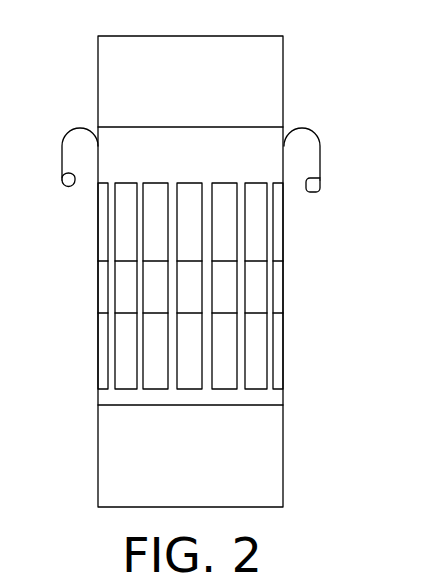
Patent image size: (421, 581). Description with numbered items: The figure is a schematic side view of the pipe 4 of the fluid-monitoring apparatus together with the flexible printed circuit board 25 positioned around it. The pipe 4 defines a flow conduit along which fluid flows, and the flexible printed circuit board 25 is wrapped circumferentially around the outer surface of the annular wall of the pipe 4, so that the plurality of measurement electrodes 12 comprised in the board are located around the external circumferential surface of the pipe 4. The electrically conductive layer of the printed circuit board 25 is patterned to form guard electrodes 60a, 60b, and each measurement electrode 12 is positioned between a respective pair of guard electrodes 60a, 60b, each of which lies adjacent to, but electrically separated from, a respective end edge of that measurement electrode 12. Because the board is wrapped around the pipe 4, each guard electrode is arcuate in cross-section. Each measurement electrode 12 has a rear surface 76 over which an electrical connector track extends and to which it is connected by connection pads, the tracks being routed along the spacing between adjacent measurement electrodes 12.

The pipe 4 is at (292, 73).
The measurement electrode 12 is at (112, 285).
The flexible printed circuit board 25 is at (92, 394).
The guard electrode 60a is at (262, 232).
The guard electrode 60b is at (262, 357).
The rear surface 76 is at (320, 185).